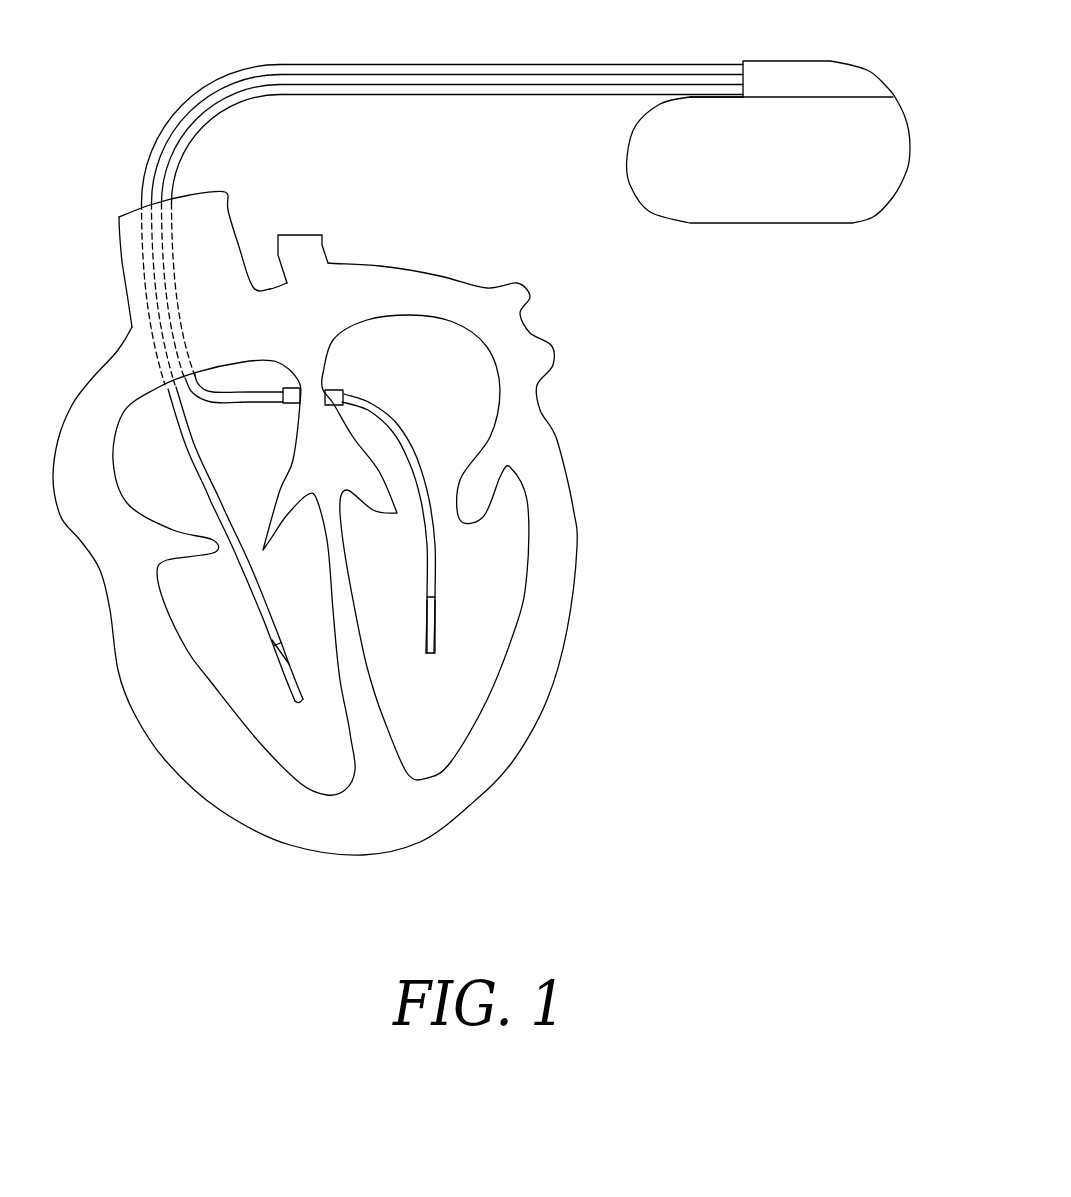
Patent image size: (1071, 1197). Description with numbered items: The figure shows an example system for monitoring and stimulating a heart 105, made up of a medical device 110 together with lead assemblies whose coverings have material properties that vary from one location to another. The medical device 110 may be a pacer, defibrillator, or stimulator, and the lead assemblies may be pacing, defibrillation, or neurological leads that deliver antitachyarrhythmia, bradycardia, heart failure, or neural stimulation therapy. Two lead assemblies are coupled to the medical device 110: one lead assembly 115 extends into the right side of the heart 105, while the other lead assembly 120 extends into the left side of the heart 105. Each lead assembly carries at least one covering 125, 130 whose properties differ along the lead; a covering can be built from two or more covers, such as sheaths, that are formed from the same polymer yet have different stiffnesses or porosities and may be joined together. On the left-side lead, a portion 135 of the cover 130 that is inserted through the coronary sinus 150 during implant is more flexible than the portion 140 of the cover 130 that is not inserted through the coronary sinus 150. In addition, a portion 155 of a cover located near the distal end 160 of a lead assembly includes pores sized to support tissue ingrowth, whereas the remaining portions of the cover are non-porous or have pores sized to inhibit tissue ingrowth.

The heart 105 is at (175, 767).
The medical device 110 is at (872, 70).
The lead assembly 115 is at (322, 64).
The lead assembly 120 is at (330, 97).
The covering 125 is at (253, 577).
The covering 130 is at (440, 648).
The portion of cover 135 is at (426, 551).
The portion of cover 140 is at (195, 133).
The coronary sinus 150 is at (331, 390).
The portion of cover 155 is at (283, 678).
The distal end 160 is at (302, 703).